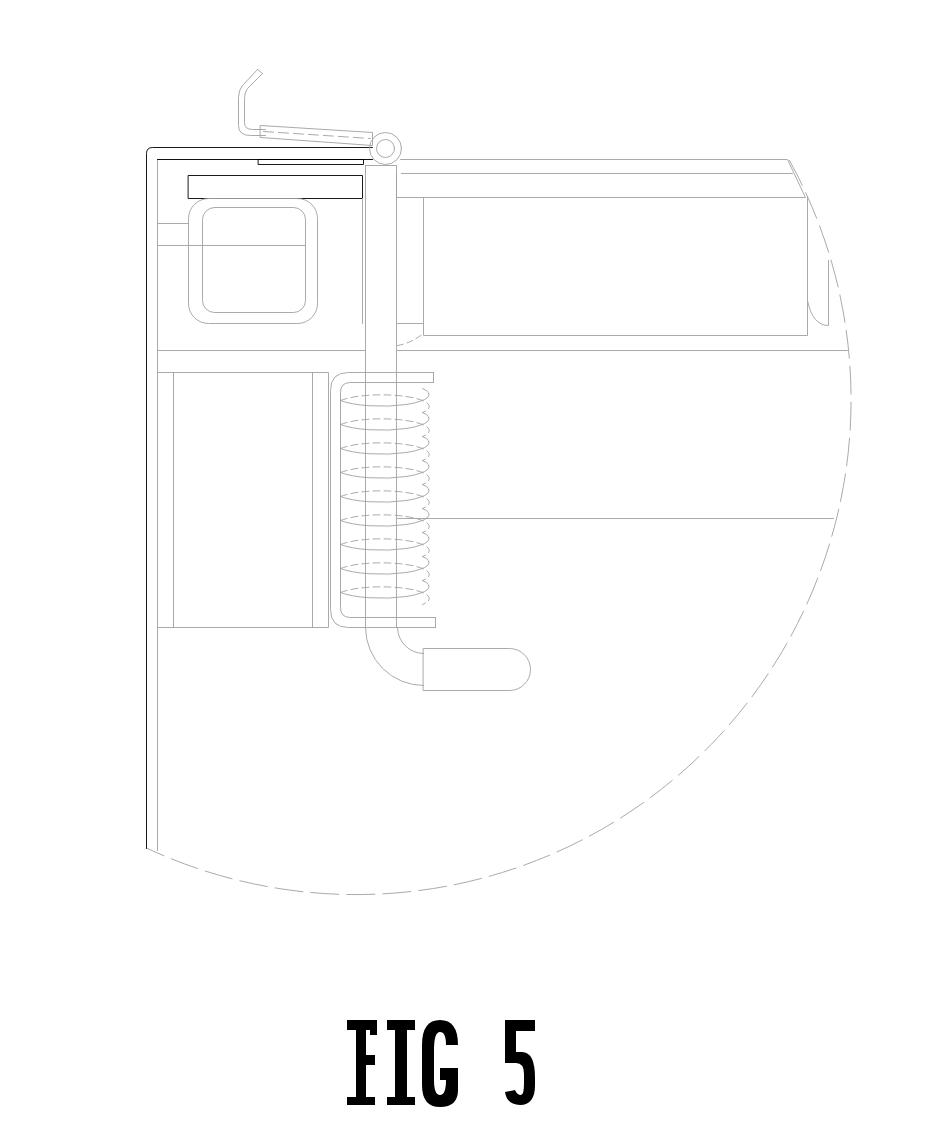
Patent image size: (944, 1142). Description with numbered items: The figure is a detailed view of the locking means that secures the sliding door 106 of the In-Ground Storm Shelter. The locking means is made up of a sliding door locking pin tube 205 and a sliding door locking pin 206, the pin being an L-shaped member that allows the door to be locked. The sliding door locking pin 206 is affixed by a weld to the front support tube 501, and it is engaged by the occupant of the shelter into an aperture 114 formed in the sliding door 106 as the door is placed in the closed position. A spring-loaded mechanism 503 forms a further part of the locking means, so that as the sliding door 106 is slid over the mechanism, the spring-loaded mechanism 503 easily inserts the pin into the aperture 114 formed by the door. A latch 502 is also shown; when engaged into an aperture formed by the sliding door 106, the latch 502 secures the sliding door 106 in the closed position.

The front support tube 501 is at (193, 260).
The latch 502 is at (332, 133).
The aperture 114 is at (403, 183).
The sliding door 106 is at (672, 172).
The sliding door locking pin 206 is at (380, 252).
The spring-loaded mechanism 503 is at (353, 417).
The sliding door locking pin tube 205 is at (163, 547).